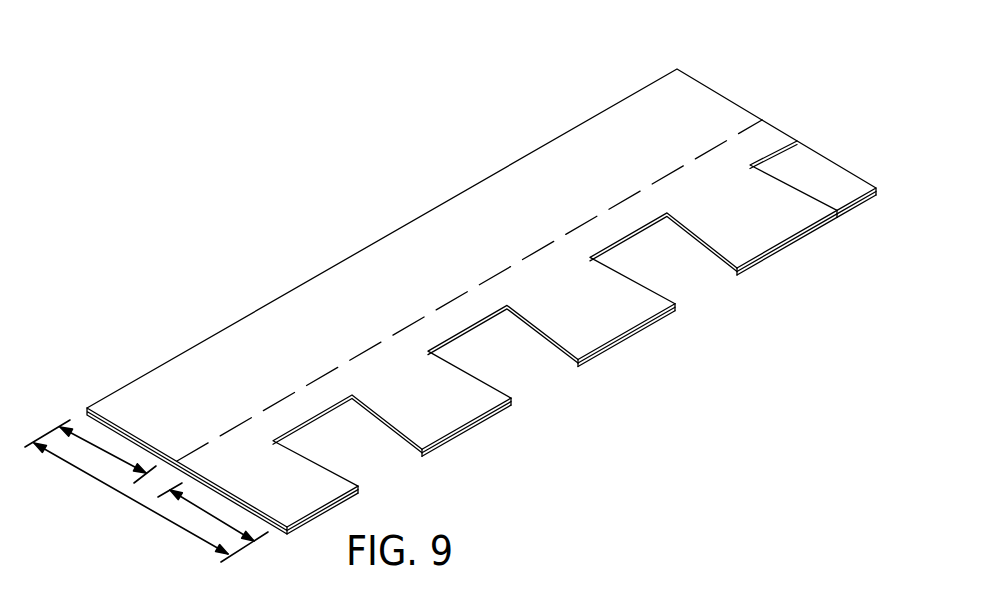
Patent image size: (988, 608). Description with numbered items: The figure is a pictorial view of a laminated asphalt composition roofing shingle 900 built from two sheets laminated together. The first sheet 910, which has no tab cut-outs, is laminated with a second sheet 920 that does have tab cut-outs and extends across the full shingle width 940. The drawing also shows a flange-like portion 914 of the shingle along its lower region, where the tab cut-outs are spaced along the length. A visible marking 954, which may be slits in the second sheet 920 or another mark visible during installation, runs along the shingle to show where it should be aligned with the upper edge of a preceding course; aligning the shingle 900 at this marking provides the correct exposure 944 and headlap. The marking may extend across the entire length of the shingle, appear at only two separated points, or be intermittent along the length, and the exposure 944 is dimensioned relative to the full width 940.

The laminated asphalt composition roofing shingle 900 is at (856, 76).
The first sheet 910 is at (830, 158).
The notched lower flange 914 is at (173, 358).
The second sheet 920 is at (717, 91).
The visible marking 954 is at (181, 452).
The exposure 944 is at (120, 460).
The full shingle width 940 is at (200, 541).